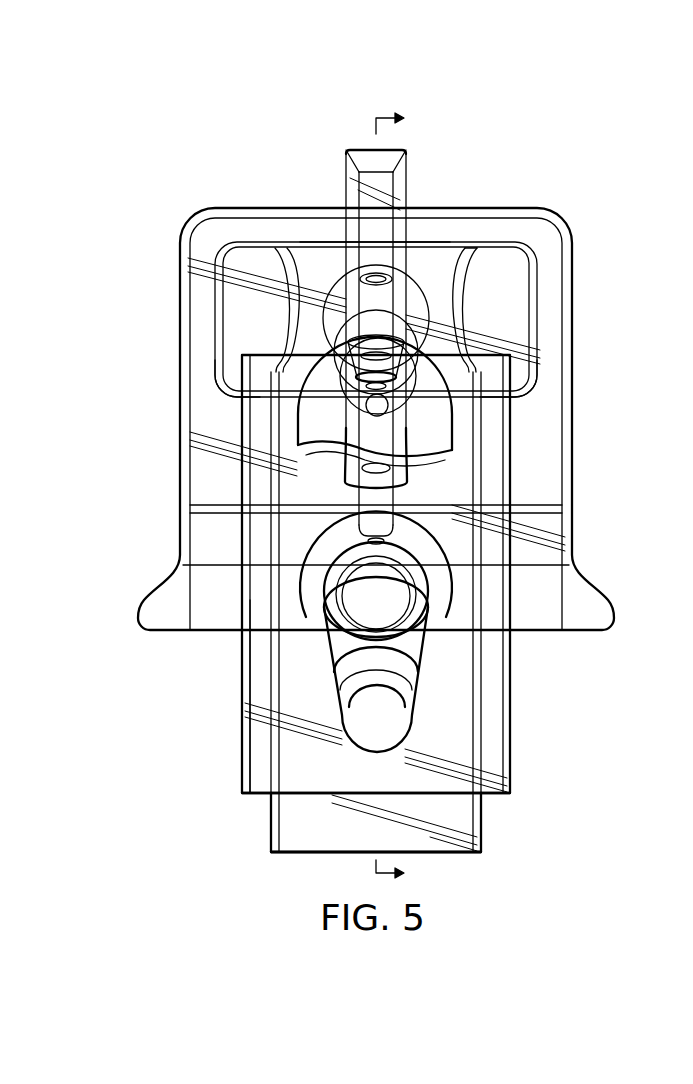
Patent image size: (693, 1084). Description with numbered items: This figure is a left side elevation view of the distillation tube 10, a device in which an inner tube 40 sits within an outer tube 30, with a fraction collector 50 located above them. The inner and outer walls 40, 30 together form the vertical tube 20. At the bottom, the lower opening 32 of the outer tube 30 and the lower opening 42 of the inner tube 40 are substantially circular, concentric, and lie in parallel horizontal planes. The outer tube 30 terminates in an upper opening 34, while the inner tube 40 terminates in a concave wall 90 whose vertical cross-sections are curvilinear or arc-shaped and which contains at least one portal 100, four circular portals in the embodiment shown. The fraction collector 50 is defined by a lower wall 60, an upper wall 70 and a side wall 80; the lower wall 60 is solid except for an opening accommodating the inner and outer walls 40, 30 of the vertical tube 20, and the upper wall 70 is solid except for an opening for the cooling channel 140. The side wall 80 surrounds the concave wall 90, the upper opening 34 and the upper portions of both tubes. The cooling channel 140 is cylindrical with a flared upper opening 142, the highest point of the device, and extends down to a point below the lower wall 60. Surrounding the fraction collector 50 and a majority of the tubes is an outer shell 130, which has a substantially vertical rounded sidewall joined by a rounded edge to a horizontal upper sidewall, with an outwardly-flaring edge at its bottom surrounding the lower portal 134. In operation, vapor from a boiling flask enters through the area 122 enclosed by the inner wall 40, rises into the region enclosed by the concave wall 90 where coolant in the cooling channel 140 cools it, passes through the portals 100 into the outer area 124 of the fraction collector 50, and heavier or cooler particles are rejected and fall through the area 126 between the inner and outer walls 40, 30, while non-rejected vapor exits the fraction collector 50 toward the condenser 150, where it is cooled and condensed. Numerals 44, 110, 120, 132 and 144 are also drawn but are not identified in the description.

The distillation tube 10 is at (275, 195).
The vertical tube 20 is at (463, 713).
The outer tube 30 is at (495, 672).
The lower opening of the outer tube 32 is at (497, 793).
The upper opening of the outer tube 34 is at (495, 355).
The inner tube 40 is at (308, 813).
The lower opening of the inner tube 42 is at (443, 850).
The guide rails 44 is at (308, 715).
The fraction collector 50 is at (225, 383).
The lower wall 60 is at (493, 392).
The upper wall 70 is at (345, 242).
The side wall 80 is at (218, 332).
The concave wall 90 is at (475, 268).
The portal 100 is at (467, 305).
The bottom face 110 is at (303, 865).
The cylindrical body 120 is at (315, 662).
The area enclosed by the inner wall 122 is at (327, 750).
The outer area of the fraction collector 124 is at (247, 313).
The area between the inner wall and the outer wall 126 is at (263, 763).
The outer shell 130 is at (182, 430).
The upper rib band 132 is at (340, 325).
The lower portal 134 is at (213, 630).
The cooling channel 140 is at (407, 192).
The upper opening of the cooling channel 142 is at (352, 150).
The nozzle tube 144 is at (400, 180).
The condenser 150 is at (325, 593).